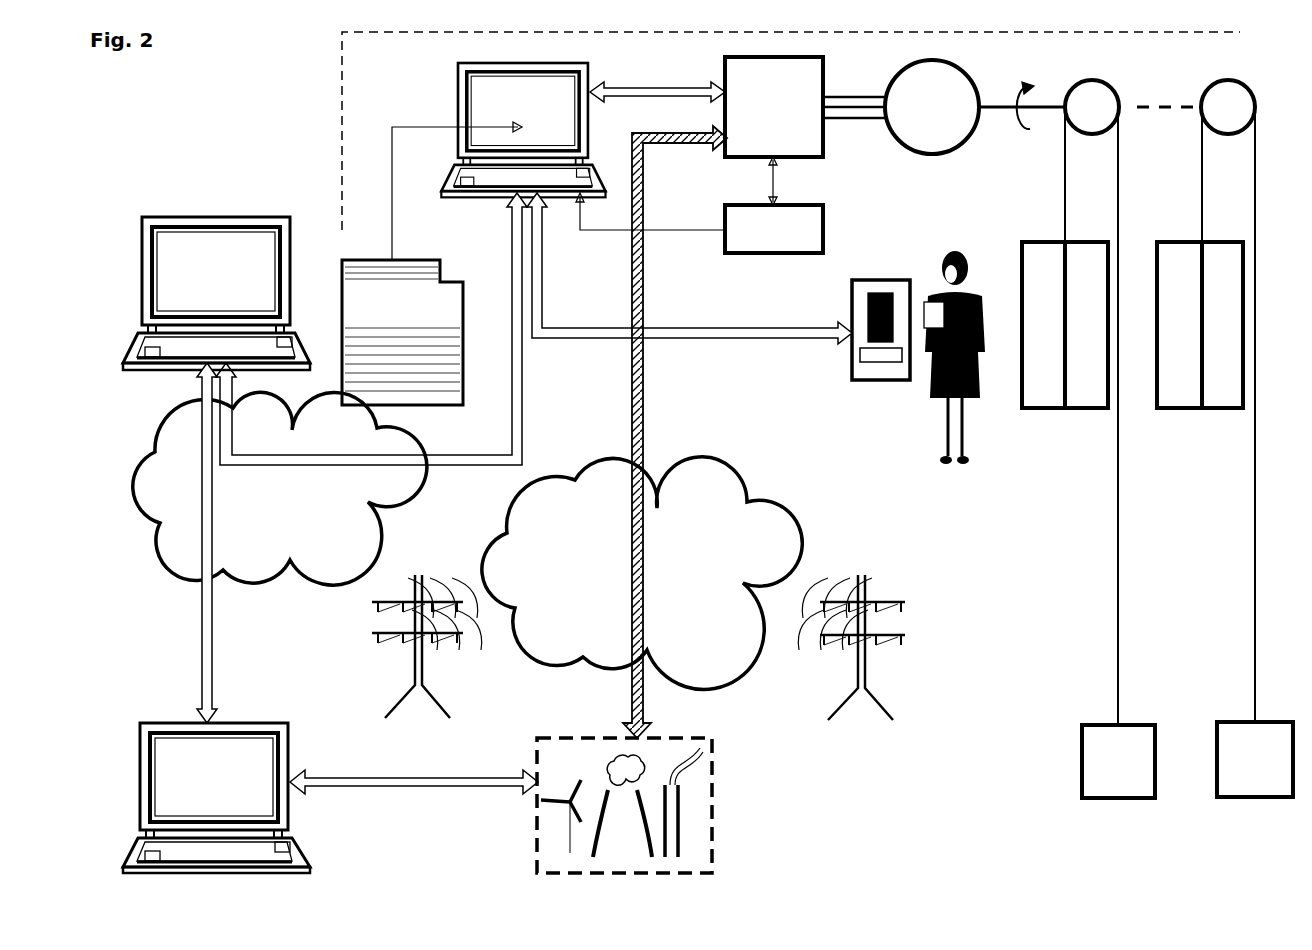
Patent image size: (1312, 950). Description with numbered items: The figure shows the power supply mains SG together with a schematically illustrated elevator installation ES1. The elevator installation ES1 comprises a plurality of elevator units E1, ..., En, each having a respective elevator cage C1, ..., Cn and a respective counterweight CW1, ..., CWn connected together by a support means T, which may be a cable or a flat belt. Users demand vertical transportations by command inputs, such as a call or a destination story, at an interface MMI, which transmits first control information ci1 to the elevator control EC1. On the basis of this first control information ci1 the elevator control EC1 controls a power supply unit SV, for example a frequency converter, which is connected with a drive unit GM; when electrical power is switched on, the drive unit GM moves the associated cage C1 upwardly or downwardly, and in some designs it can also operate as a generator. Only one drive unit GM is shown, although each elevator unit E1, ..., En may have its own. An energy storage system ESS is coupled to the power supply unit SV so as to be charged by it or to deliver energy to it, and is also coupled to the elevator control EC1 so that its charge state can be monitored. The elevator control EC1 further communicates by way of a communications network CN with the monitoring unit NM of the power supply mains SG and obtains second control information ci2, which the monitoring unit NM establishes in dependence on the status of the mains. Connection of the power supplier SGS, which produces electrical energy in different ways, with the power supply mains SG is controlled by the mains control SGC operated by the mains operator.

The elevator installation ES1 is at (583, 118).
The elevator control EC1 is at (523, 110).
The power supply unit SV is at (774, 131).
The drive unit GM is at (944, 107).
The elevator unit E1 is at (1083, 99).
The elevator unit En is at (1196, 99).
The elevator cage C1 is at (1065, 312).
The elevator cage Cn is at (1200, 312).
The counterweight CW1 is at (1118, 761).
The counterweight CWn is at (1255, 759).
The support means T is at (1225, 543).
The interface MMI is at (918, 357).
The energy storage system ESS is at (699, 223).
The first control information ci1 is at (689, 268).
The second control information ci2 is at (371, 329).
The monitoring unit NM is at (216, 293).
The communications network CN is at (280, 543).
The mains control SGC is at (330, 798).
The power supply mains SG is at (638, 432).
The power supplier SGS is at (624, 805).